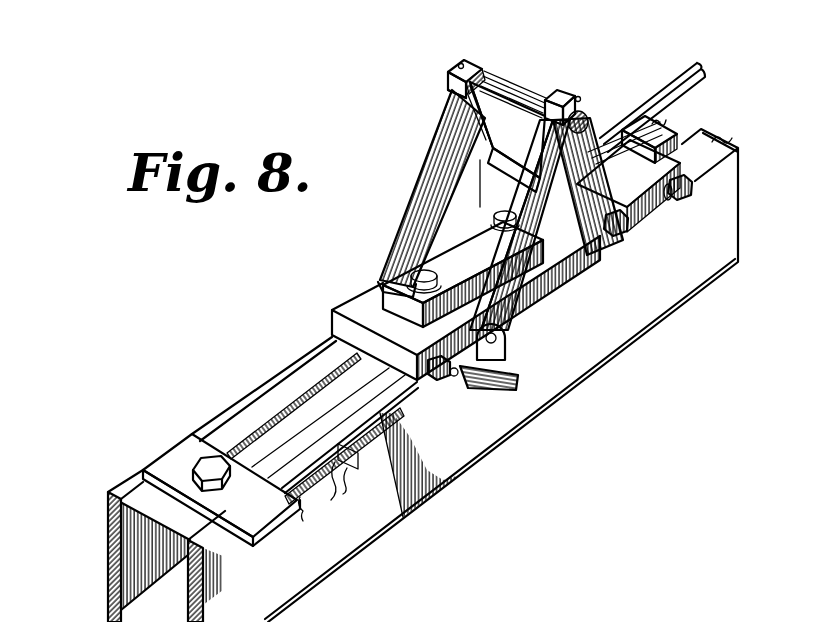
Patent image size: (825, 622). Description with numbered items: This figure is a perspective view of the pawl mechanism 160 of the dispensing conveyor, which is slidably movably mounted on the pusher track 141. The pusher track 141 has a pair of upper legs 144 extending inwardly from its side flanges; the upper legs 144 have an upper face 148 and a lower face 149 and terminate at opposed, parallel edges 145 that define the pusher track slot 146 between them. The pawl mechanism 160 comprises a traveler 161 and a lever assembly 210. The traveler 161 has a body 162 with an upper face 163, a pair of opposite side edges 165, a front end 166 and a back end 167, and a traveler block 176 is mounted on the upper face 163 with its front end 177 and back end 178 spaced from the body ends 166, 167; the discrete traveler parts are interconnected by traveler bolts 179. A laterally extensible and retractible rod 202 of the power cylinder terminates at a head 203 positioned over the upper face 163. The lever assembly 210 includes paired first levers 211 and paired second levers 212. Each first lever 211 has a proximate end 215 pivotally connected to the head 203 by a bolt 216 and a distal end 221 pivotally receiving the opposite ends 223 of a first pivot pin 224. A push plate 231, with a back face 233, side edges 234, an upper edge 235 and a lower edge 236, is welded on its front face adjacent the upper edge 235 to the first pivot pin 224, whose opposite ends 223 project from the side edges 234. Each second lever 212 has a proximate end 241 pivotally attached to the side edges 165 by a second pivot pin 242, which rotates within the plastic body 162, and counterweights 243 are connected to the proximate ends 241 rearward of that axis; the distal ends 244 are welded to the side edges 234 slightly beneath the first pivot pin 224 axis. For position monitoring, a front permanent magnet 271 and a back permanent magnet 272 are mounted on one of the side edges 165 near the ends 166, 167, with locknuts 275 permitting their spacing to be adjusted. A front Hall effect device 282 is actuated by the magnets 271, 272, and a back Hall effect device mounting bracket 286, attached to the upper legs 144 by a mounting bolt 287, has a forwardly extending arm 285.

The pusher track 141 is at (740, 263).
The upper legs 144 is at (406, 378).
The edges 145 is at (290, 402).
The pusher track slot 146 is at (288, 410).
The upper face 148 is at (258, 453).
The lower face 149 is at (182, 535).
The pawl mechanism 160 is at (332, 316).
The traveler 161 is at (395, 270).
The body 162 is at (332, 332).
The upper face 163 is at (475, 295).
The side edges 165 is at (543, 292).
The front end 166 is at (400, 377).
The back end 167 is at (672, 150).
The traveler block 176 is at (397, 298).
The front end 177 is at (527, 212).
The back end 178 is at (390, 298).
The traveler bolts 179 is at (430, 283).
The rod 202 is at (700, 85).
The head 203 is at (624, 160).
The lever assembly 210 is at (466, 60).
The first levers 211 is at (561, 98).
The second levers 212 is at (410, 232).
The proximate end 215 is at (598, 256).
The bolt 216 is at (622, 232).
The distal end 221 is at (461, 67).
The opposite ends 223 is at (585, 120).
The first pivot pin 224 is at (506, 92).
The push plate 231 is at (458, 84).
The back face 233 is at (520, 130).
The side edges 234 is at (457, 116).
The upper edge 235 is at (488, 82).
The lower edge 236 is at (470, 130).
The proximate end 241 is at (505, 312).
The second pivot pin 242 is at (495, 344).
The counterweights 243 is at (510, 392).
The distal ends 244 is at (458, 110).
The front permanent magnet 271 is at (690, 192).
The back permanent magnet 272 is at (452, 376).
The locknuts 275 is at (673, 201).
The front Hall effect device 282 is at (345, 466).
The arm 285 is at (300, 497).
The back Hall effect device mounting bracket 286 is at (192, 434).
The mounting bolt 287 is at (201, 464).